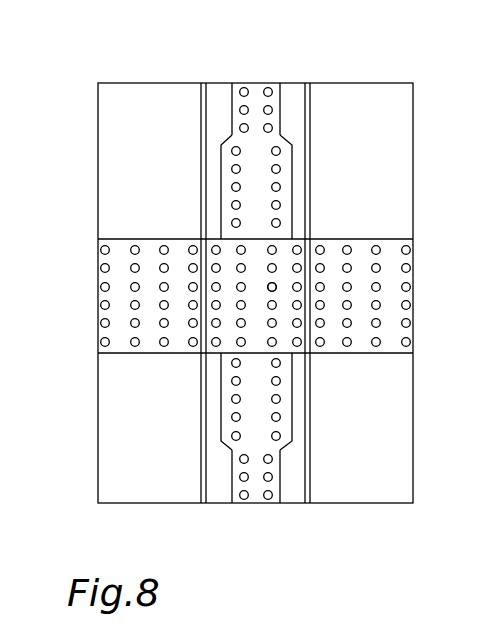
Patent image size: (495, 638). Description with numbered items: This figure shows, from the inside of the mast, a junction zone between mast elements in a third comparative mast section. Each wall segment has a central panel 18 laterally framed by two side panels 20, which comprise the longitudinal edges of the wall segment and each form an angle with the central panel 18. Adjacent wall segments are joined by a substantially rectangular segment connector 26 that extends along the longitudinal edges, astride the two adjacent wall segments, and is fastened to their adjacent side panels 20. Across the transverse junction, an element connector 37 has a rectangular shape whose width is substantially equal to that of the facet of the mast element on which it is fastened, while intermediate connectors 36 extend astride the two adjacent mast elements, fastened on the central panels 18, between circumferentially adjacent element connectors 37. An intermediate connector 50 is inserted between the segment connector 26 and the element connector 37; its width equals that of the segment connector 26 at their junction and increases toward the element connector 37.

The central panel 18 is at (255, 293).
The side panel 20 is at (220, 88).
The segment connector 26 is at (257, 88).
The intermediate connector 36 is at (121, 263).
The element connector 37 is at (278, 278).
The intermediate connector 50 is at (262, 186).